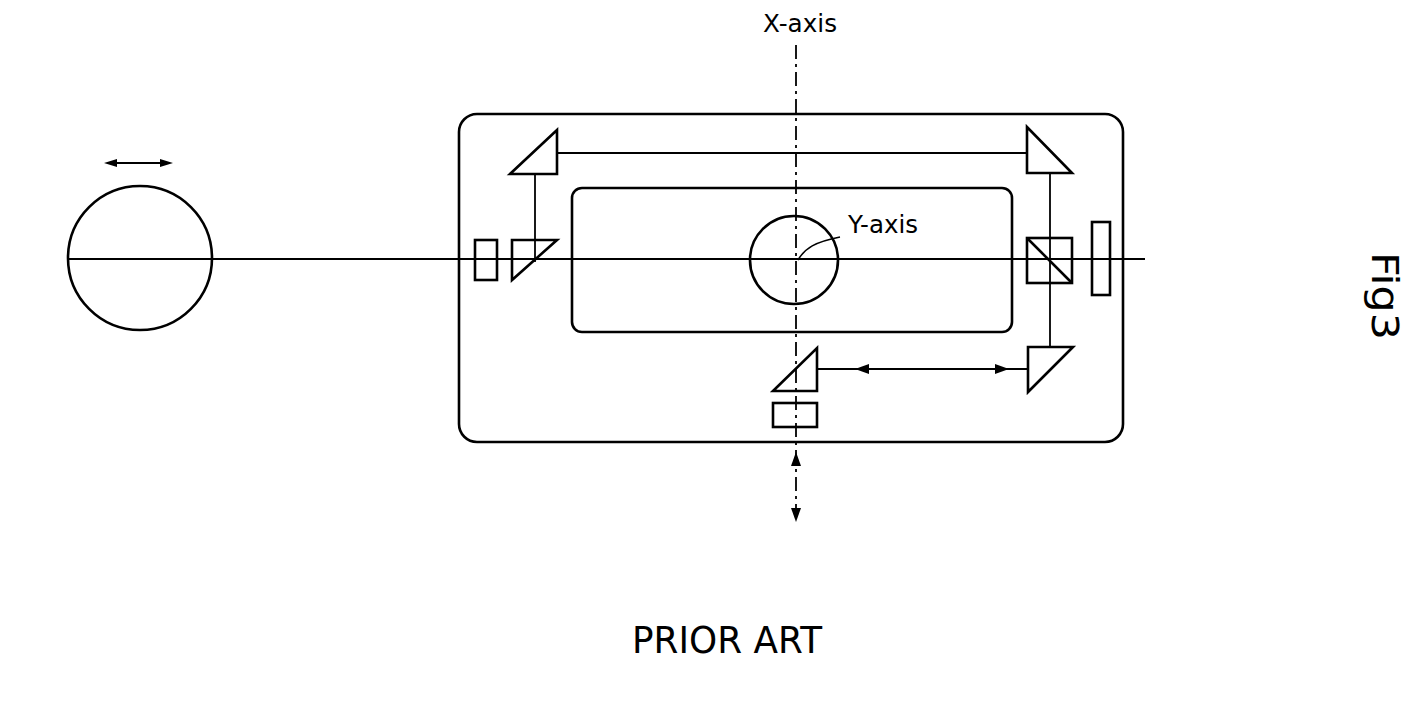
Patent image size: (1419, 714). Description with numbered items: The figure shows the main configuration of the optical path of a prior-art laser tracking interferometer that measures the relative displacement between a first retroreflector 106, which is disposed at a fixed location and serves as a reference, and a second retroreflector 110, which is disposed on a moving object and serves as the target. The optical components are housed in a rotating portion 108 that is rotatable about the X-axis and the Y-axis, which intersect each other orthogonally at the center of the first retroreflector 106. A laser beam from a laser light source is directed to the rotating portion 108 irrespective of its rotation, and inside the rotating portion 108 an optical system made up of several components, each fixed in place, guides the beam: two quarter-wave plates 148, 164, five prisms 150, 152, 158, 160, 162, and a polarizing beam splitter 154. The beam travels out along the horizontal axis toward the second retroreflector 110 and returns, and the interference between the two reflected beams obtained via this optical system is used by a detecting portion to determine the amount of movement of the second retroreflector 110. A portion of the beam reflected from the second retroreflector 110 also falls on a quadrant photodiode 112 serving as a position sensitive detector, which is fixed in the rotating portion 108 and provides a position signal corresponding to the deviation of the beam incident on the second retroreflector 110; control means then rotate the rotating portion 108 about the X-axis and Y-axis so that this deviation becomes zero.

The first retroreflector 106 is at (752, 240).
The rotating portion 108 is at (940, 114).
The second retroreflector 110 is at (196, 210).
The quadrant photodiode 112 is at (1103, 232).
The λ/4 plate 148 is at (773, 412).
The prism 150 is at (785, 378).
The prism 152 is at (1042, 378).
The PBS 154 is at (1027, 268).
The prism 158 is at (1033, 128).
The prism 160 is at (550, 138).
The prism 162 is at (528, 280).
The λ/4 plate 164 is at (475, 249).